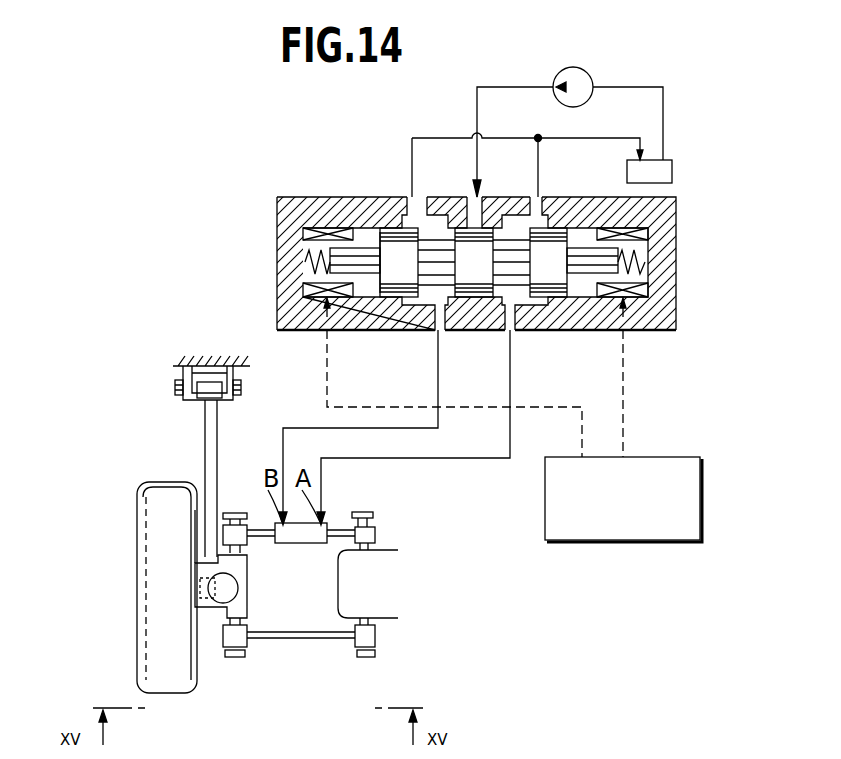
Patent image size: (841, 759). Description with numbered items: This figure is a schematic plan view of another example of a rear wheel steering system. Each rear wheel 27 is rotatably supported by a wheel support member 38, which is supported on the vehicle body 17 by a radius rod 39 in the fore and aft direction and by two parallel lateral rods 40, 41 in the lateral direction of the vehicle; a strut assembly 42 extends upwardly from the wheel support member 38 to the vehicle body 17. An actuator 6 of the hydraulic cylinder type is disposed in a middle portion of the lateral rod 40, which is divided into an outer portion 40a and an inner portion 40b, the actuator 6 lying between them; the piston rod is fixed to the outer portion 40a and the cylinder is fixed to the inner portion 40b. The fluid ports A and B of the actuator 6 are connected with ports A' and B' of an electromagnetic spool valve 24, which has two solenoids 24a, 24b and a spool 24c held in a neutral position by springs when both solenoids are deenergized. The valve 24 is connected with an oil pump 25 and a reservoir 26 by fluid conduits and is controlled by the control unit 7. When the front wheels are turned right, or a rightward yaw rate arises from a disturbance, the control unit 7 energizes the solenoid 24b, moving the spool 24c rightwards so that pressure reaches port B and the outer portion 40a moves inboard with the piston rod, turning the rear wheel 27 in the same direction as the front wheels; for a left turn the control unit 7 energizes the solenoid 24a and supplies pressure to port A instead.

The electromagnetic spool valve 24 is at (335, 197).
The solenoid 24a is at (307, 223).
The solenoid 24b is at (645, 237).
The spool 24c is at (390, 225).
The oil pump 25 is at (587, 78).
The reservoir 26 is at (673, 172).
The control unit 7 is at (703, 489).
The actuator 6 is at (310, 545).
The lateral rod 40 is at (370, 427).
The outer portion 40a is at (268, 523).
The inner portion 40b is at (338, 523).
The vehicle body 17 is at (190, 362).
The radius rod 39 is at (205, 450).
The rear wheel 27 is at (150, 574).
The wheel support member 38 is at (210, 606).
The strut assembly 42 is at (238, 590).
The lateral rod 41 is at (297, 640).